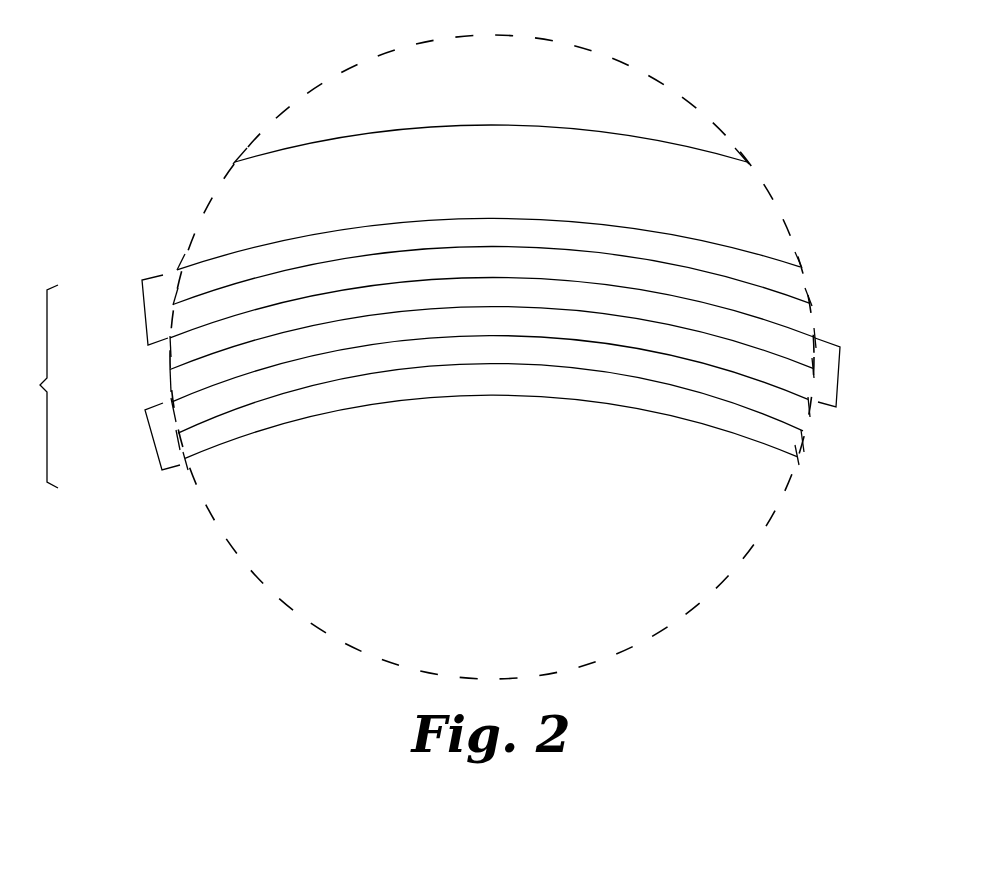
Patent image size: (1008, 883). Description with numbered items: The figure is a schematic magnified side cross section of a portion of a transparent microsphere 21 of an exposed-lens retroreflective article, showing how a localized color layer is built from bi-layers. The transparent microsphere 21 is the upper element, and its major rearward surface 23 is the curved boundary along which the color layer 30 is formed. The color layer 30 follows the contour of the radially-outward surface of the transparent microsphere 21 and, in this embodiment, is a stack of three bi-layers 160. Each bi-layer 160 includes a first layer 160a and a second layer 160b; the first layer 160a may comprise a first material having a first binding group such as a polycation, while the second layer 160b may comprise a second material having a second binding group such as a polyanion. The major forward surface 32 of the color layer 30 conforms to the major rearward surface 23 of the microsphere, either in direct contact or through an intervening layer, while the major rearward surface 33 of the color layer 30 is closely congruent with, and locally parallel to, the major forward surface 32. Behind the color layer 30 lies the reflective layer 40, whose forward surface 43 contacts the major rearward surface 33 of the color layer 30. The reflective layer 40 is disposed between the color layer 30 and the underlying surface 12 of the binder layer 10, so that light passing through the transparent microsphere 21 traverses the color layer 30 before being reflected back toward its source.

The binder layer 10 is at (499, 91).
The underlying surface 12 is at (667, 138).
The transparent microsphere 21 is at (502, 561).
The major rearward surface 23 is at (373, 403).
The color layer 30 is at (468, 367).
The major forward surface 32 is at (563, 400).
The major rearward surface 33 is at (573, 218).
The reflective layer 40 is at (498, 187).
The forward surface 43 is at (347, 230).
The bi-layer 160 is at (147, 310).
The first layer 160a is at (180, 386).
The second layer 160b is at (186, 348).